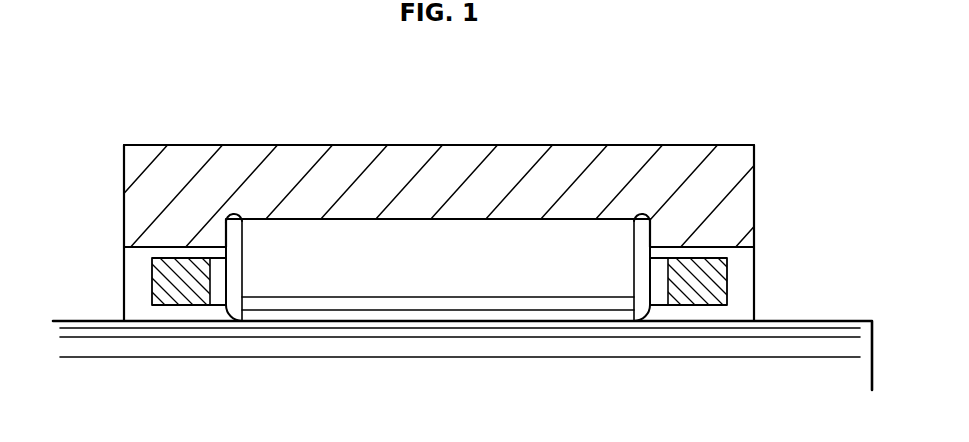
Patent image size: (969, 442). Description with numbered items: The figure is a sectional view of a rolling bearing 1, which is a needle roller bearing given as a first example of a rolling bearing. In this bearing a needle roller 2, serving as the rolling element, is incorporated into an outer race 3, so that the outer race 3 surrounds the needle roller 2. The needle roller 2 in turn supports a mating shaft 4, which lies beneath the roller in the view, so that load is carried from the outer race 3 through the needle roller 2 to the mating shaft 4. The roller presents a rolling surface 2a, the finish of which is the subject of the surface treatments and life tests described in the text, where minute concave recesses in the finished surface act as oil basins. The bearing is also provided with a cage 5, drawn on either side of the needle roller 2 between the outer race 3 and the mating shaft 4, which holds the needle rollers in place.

The rolling bearing 1 is at (617, 140).
The needle roller 2 is at (498, 242).
The outer peripheral surface of roller 2a is at (398, 218).
The outer race 3 is at (285, 158).
The mating shaft 4 is at (811, 332).
The cage 5 is at (165, 277).